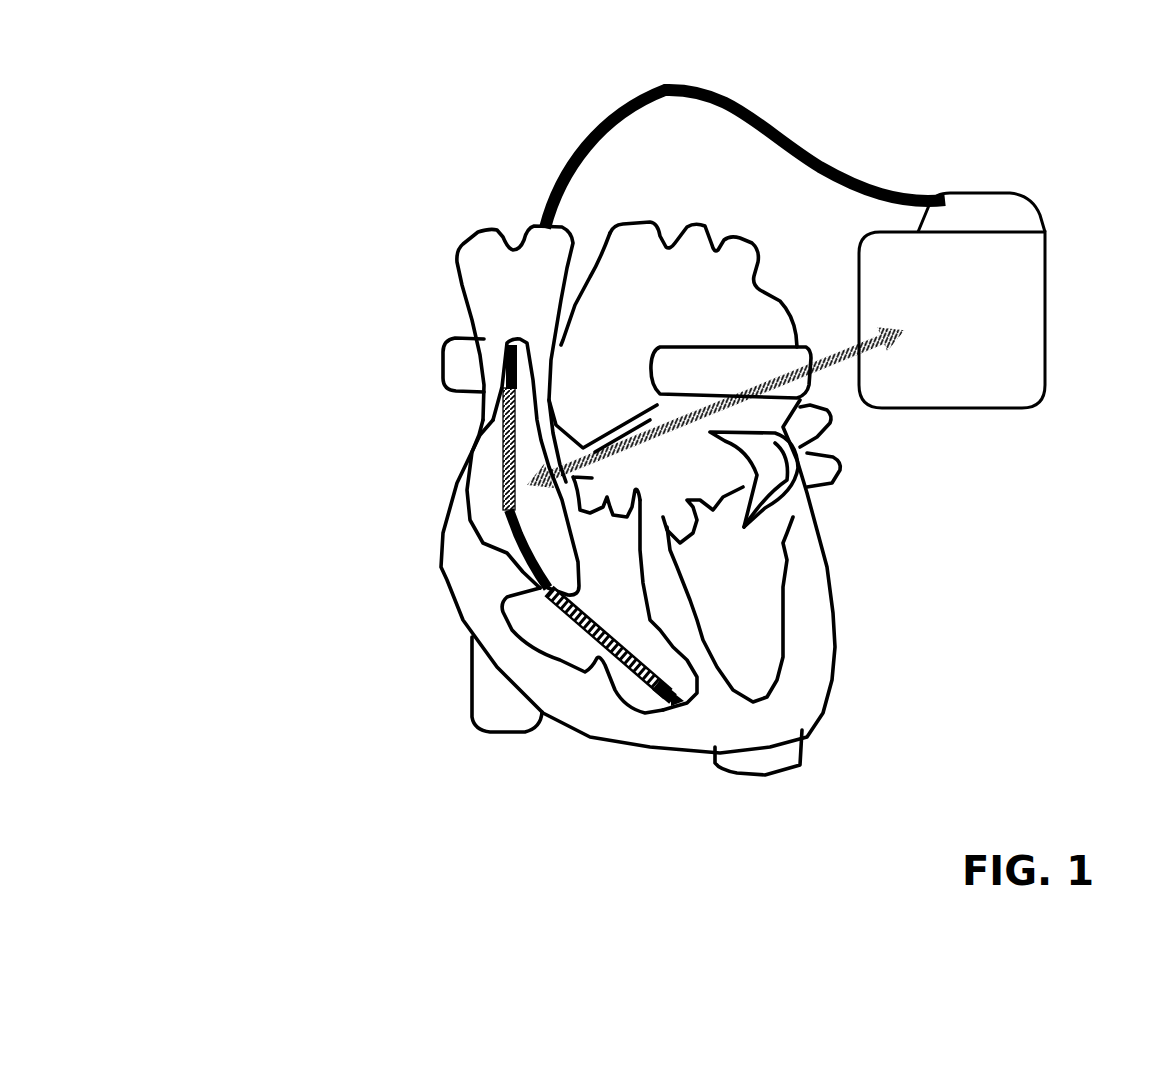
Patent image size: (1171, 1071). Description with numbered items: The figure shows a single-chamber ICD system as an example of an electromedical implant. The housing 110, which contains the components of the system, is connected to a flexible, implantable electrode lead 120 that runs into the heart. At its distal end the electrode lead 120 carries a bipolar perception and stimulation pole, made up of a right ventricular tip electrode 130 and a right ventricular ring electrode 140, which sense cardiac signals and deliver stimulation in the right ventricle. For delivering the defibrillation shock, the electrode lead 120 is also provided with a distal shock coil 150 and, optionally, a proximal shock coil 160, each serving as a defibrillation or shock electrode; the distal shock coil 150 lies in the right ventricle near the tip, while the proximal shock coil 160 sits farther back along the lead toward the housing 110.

The housing 110 is at (1012, 272).
The electrode lead 120 is at (608, 112).
The right ventricular tip electrode 130 is at (680, 707).
The right ventricular ring electrode 140 is at (660, 698).
The distal shock coil 150 is at (600, 648).
The proximal shock coil 160 is at (506, 450).